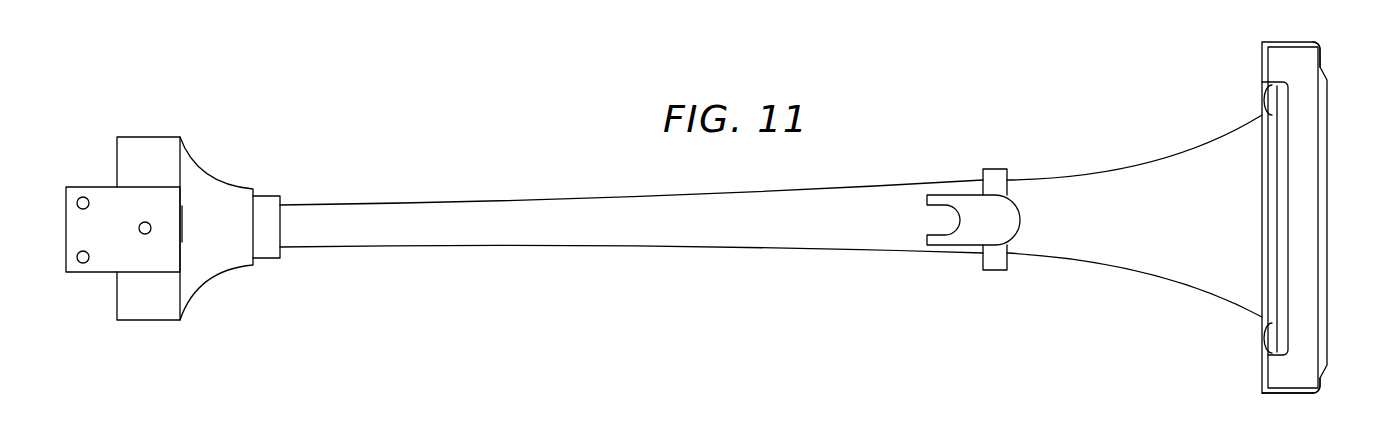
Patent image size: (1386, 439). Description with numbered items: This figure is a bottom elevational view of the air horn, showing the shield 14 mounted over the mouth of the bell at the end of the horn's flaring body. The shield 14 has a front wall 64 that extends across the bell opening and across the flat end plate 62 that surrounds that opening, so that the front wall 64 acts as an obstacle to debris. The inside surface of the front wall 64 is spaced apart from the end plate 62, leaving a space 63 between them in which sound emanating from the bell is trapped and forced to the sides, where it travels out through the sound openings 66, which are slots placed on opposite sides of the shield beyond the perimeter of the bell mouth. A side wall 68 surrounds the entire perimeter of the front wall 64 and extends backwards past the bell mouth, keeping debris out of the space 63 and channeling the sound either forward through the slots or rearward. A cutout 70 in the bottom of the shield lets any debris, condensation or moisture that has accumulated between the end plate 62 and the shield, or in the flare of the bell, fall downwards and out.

The shield 14 is at (1328, 249).
The end plate 62 is at (1270, 127).
The space 63 is at (1282, 158).
The front wall 64 is at (1328, 183).
The sound openings 66 is at (1322, 62).
The side wall 68 is at (1278, 395).
The cutout 70 is at (1262, 320).